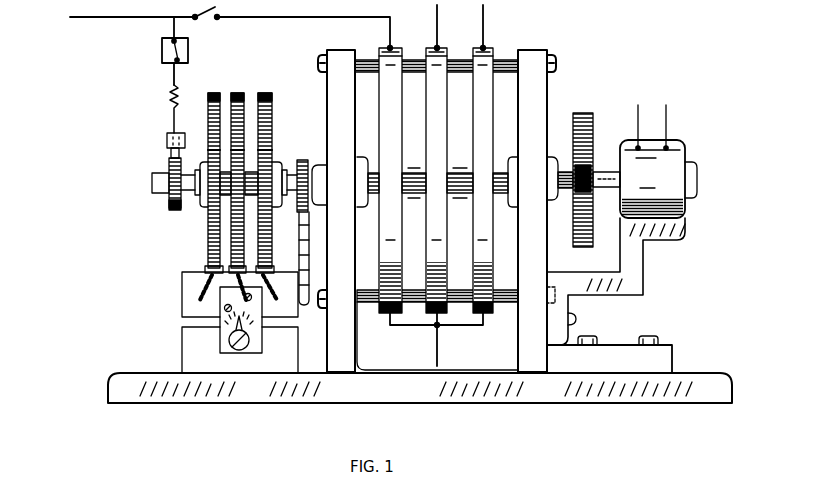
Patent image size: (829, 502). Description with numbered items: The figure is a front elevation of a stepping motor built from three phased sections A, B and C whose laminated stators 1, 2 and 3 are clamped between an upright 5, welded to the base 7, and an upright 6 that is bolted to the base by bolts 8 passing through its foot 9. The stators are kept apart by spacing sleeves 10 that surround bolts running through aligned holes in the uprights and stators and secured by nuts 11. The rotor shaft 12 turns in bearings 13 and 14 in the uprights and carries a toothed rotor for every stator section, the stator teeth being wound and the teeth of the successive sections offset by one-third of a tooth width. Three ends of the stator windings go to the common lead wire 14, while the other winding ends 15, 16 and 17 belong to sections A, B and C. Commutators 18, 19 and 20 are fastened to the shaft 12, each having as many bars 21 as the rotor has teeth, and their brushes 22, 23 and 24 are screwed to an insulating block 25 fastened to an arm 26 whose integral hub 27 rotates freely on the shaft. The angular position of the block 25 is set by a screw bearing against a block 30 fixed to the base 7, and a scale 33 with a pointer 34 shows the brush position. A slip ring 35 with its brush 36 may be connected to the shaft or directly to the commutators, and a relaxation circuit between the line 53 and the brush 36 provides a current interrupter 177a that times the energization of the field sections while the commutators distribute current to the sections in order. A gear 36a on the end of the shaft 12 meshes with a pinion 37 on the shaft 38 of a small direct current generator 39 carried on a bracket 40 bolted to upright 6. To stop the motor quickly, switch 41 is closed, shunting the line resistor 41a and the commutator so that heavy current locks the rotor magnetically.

The stator 1 is at (382, 214).
The stator 2 is at (432, 217).
The stator 3 is at (478, 217).
The upright 5 is at (327, 91).
The upright 6 is at (548, 93).
The base 7 is at (722, 391).
The bolts 8 is at (655, 336).
The foot 9 is at (658, 364).
The spacing sleeves 10 is at (505, 60).
The nuts 11 is at (316, 63).
The rotor shaft 12 is at (150, 183).
The bearing 13 is at (316, 168).
The bearing / lead wire 14 is at (439, 342).
The stator winding end 15 is at (391, 47).
The stator winding end 16 is at (440, 48).
The stator winding end 17 is at (487, 48).
The commutator 18 is at (212, 93).
The commutator 19 is at (238, 93).
The commutator 20 is at (266, 93).
The commutator bars 21 is at (207, 120).
The brush 22 is at (205, 272).
The brush 23 is at (228, 276).
The brush 24 is at (272, 272).
The insulating block 25 is at (180, 315).
The arm 26 is at (306, 262).
The hub 27 is at (301, 162).
The block 30 is at (190, 355).
The scale 33 is at (255, 322).
The pointer 34 is at (232, 322).
The slip ring 35 is at (170, 212).
The brush 36 is at (166, 152).
The gear 36a is at (590, 112).
The pinion 37 is at (590, 166).
The shaft 38 is at (611, 190).
The direct current generator 39 is at (675, 163).
The bracket 40 is at (632, 279).
The switch 41 is at (205, 21).
The line resistor 41a is at (170, 100).
The line 53 is at (136, 18).
The current interrupter 177a is at (162, 53).